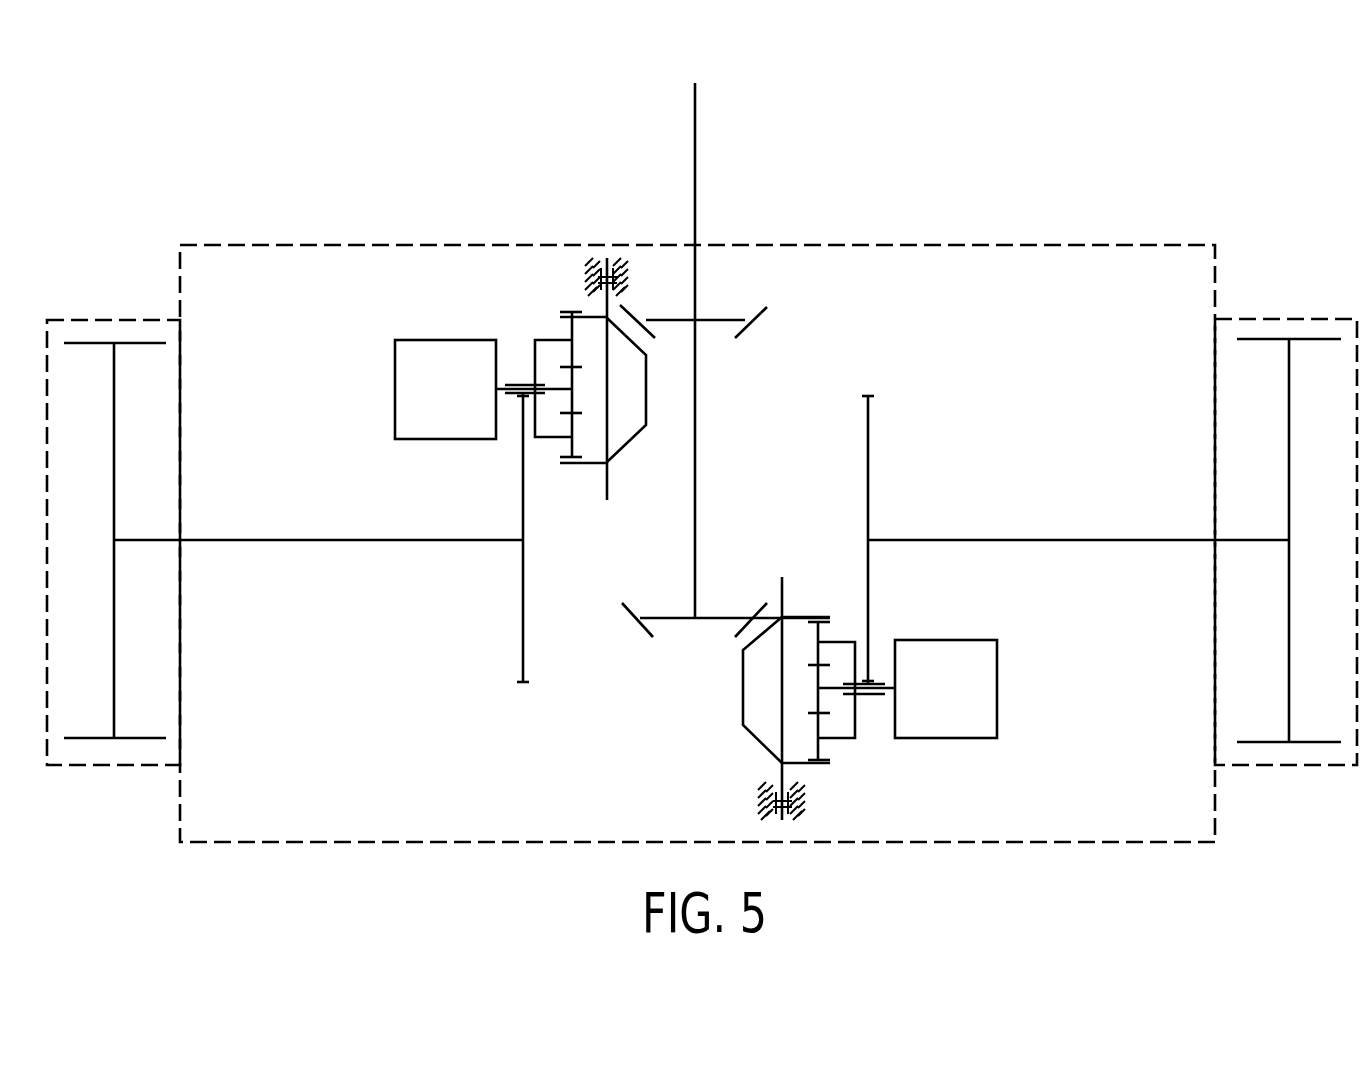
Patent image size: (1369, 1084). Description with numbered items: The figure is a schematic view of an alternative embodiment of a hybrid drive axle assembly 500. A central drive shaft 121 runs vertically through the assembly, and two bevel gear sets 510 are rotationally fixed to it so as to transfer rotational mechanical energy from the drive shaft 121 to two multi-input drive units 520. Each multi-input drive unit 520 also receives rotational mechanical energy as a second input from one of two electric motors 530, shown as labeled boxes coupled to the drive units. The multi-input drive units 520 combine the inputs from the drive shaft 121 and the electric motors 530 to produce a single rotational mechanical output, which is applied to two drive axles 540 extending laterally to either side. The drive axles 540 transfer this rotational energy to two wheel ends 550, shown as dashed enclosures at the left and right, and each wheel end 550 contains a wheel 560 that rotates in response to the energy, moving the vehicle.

The hybrid drive axle assembly 500 is at (222, 184).
The drive shaft 121 is at (695, 158).
The bevel gear sets 510 is at (752, 318).
The multi-input drive units 520 is at (627, 445).
The electric motors 530 is at (423, 338).
The drive axles 540 is at (307, 538).
The wheel ends 550 is at (112, 763).
The wheel 560 is at (114, 502).